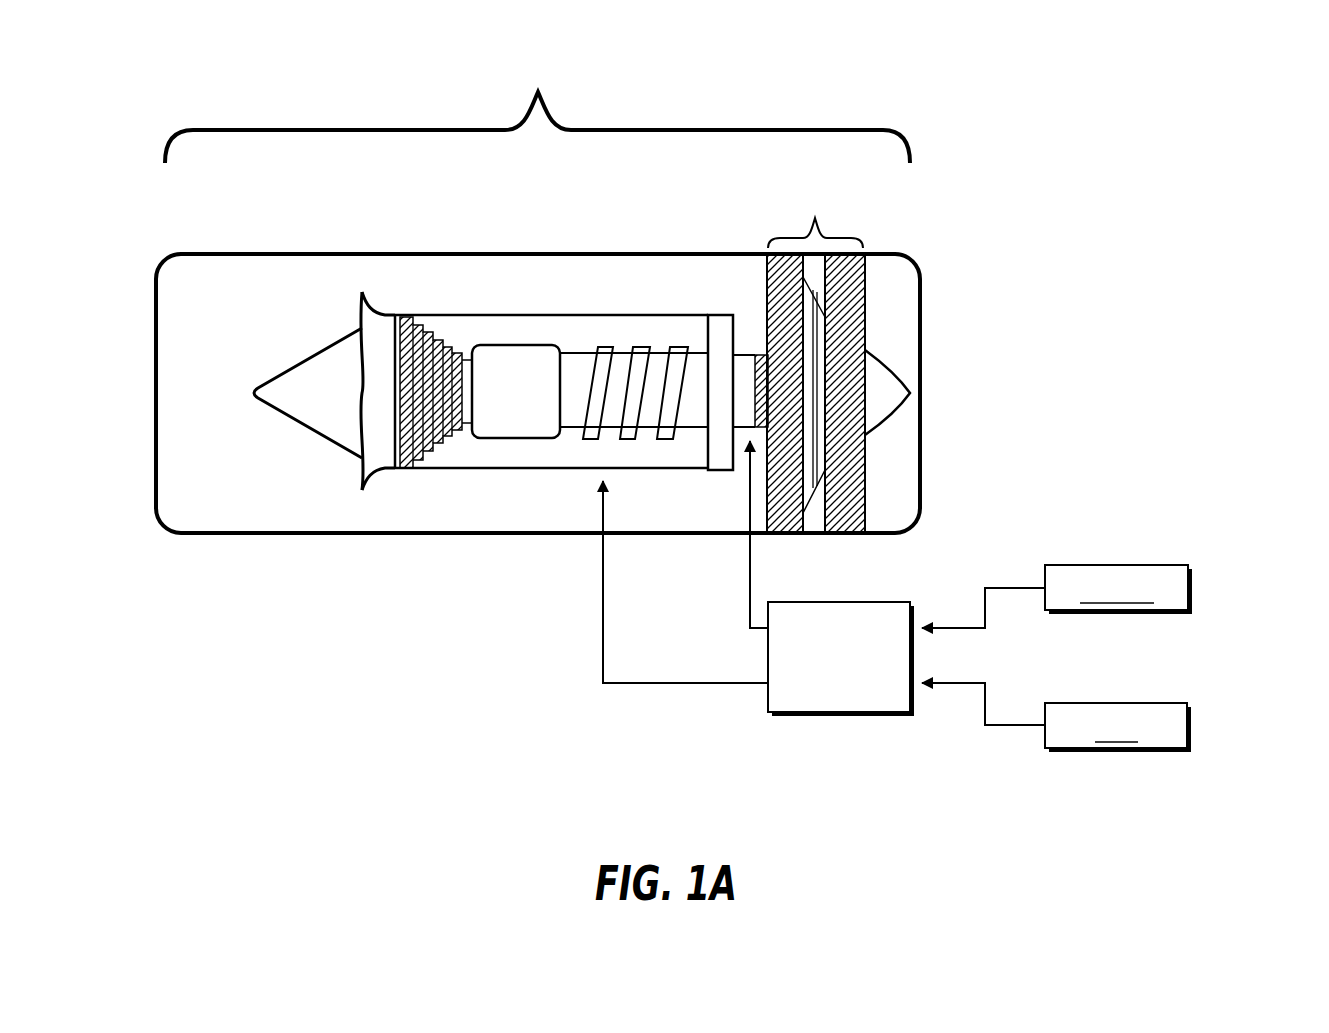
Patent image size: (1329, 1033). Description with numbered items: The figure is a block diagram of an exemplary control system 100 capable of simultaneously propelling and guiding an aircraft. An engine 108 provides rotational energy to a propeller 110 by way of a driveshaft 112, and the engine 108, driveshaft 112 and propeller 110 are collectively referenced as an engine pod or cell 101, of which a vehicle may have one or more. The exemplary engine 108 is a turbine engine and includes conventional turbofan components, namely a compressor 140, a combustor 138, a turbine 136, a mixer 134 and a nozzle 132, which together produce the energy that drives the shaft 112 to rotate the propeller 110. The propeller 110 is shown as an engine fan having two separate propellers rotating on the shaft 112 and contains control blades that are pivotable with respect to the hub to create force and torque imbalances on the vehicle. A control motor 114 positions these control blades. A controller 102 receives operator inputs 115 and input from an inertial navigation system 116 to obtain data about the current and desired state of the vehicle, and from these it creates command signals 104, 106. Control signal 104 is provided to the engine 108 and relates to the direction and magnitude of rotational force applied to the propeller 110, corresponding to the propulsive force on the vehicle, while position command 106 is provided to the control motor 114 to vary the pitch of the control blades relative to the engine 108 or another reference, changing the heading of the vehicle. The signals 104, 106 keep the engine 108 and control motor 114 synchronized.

The control system 100 is at (982, 78).
The engine pod 101 is at (187, 535).
The controller 102 is at (882, 712).
The control signal 104 is at (670, 683).
The position command 106 is at (750, 585).
The engine 108 is at (537, 111).
The propeller 110 is at (838, 360).
The driveshaft 112 is at (577, 367).
The control motor 114 is at (763, 349).
The operator inputs 115 is at (1188, 578).
The inertial navigation system 116 is at (1187, 717).
The nozzle 132 is at (287, 420).
The mixer 134 is at (378, 472).
The turbine 136 is at (427, 470).
The combustor 138 is at (508, 440).
The compressor 140 is at (627, 440).